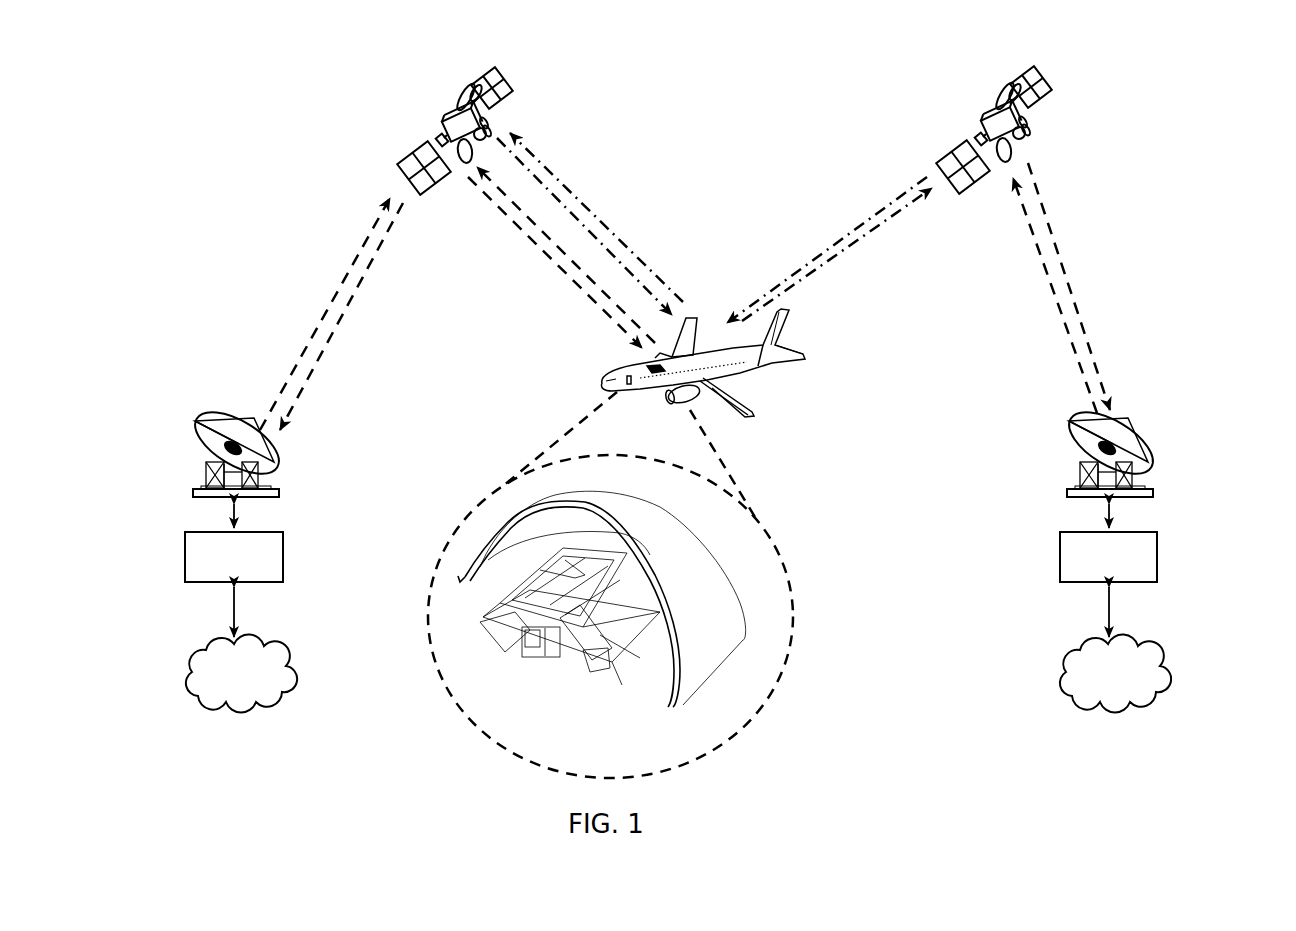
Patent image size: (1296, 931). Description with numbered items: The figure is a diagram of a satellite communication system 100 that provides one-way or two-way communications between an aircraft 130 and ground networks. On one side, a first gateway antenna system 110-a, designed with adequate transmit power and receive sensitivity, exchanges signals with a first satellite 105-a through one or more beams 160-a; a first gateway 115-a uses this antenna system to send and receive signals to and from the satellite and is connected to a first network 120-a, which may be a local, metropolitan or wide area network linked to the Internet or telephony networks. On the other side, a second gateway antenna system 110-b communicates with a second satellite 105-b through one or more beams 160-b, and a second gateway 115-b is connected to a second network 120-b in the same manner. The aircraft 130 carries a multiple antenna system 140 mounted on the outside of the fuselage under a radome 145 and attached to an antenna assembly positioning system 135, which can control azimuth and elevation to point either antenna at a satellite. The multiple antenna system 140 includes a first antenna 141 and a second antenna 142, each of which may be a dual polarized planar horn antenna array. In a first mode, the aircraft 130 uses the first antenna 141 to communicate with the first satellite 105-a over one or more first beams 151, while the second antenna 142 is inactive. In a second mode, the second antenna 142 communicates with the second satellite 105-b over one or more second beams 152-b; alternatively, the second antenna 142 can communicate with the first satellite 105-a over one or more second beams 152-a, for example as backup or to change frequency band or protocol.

The satellite communication system 100 is at (1172, 94).
The first satellite 105-a is at (452, 110).
The second satellite 105-b is at (994, 109).
The first gateway antenna system 110-a is at (277, 468).
The second gateway antenna system 110-b is at (1152, 467).
The first gateway 115-a is at (283, 568).
The second gateway 115-b is at (1157, 568).
The first network 120-a is at (280, 698).
The second network 120-b is at (1155, 700).
The aircraft 130 is at (748, 363).
The antenna assembly positioning system 135 is at (514, 662).
The multiple antenna system 140 is at (499, 597).
The first antenna 141 is at (500, 627).
The second antenna 142 is at (580, 648).
The radome 145 is at (693, 680).
The first beams 151 is at (513, 244).
The second beams 152-a is at (603, 197).
The second beams 152-b is at (823, 227).
The beams 160-a is at (302, 336).
The beams 160-b is at (1036, 291).